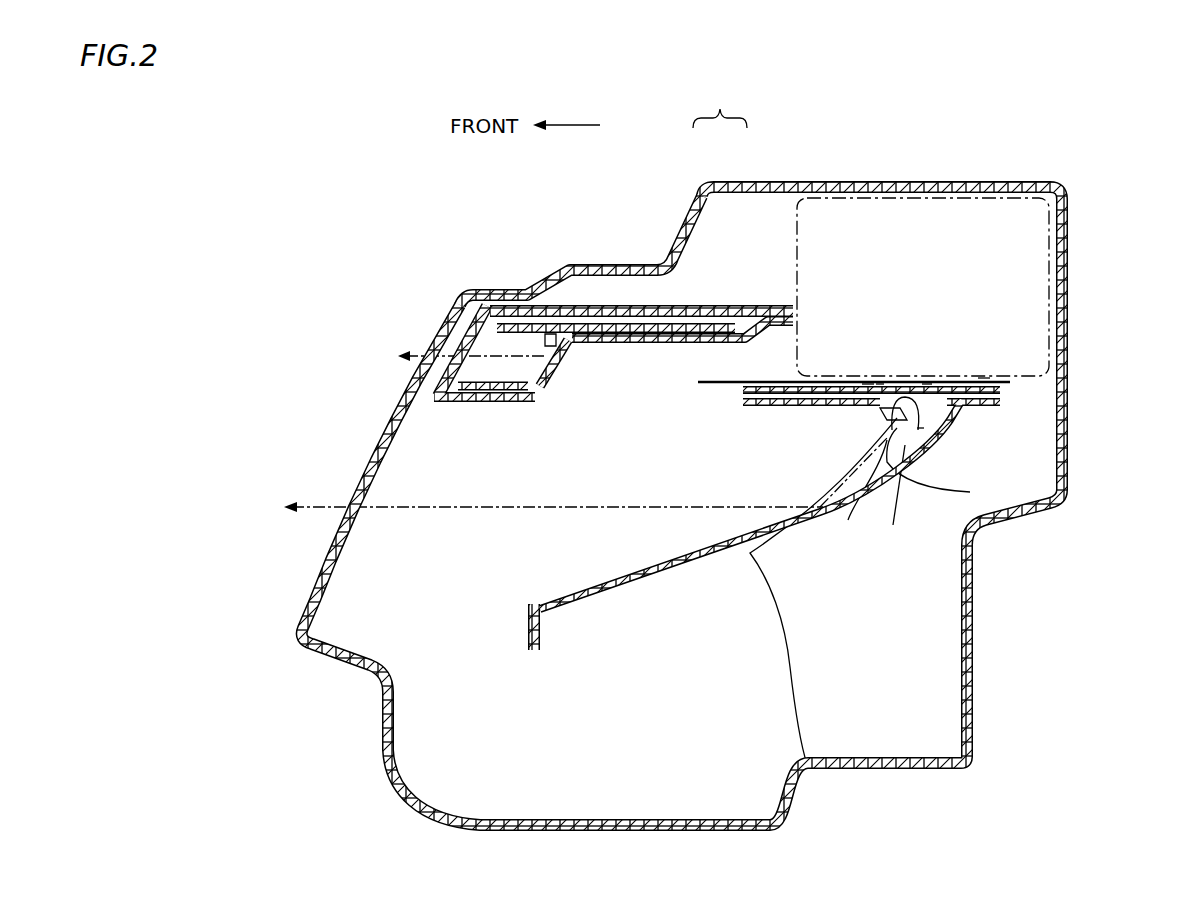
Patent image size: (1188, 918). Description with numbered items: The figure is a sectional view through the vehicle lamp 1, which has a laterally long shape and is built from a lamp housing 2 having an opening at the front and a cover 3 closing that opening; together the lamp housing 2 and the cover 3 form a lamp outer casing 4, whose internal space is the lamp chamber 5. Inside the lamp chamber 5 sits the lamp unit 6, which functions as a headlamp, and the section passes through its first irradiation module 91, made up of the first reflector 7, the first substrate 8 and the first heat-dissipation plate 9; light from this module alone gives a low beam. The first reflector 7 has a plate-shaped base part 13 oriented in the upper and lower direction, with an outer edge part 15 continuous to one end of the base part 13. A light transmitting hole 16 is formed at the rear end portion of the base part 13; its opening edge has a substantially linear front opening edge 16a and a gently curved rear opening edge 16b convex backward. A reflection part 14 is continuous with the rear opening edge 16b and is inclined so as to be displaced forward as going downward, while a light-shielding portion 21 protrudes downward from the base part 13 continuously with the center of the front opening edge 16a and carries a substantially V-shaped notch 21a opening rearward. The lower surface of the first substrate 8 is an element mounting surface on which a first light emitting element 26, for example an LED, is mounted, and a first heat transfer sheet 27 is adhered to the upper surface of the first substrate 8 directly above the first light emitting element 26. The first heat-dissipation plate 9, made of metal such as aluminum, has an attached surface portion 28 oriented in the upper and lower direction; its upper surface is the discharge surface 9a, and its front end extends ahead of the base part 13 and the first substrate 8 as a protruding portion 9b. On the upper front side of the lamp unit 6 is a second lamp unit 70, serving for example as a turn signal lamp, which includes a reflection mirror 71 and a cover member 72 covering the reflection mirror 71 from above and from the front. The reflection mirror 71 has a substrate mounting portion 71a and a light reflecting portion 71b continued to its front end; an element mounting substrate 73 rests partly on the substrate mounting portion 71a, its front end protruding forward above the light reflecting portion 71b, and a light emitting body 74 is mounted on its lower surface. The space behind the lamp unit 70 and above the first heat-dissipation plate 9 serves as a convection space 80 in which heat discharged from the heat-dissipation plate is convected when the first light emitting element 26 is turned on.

The vehicle lamp 1 is at (536, 469).
The lamp housing 2 is at (876, 158).
The cover 3 is at (683, 195).
The lamp outer casing 4 is at (720, 106).
The lamp chamber 5 is at (585, 444).
The lamp unit 6 is at (988, 621).
The first reflector 7 is at (905, 670).
The first substrate 8 is at (945, 340).
The first heat-dissipation plate 9 is at (1015, 258).
The discharge surface 9a is at (1059, 338).
The protruding portion 9b is at (649, 429).
The base part 13 is at (956, 375).
The reflection part 14 is at (815, 794).
The outer edge part 15 is at (748, 639).
The light transmitting hole 16 is at (939, 582).
The front opening edge 16a is at (1009, 476).
The rear opening edge 16b is at (1014, 420).
The light-shielding portion 21 is at (1014, 527).
The notch 21a is at (1046, 523).
The first light emitting element 26 is at (1027, 443).
The first heat transfer sheet 27 is at (963, 261).
The attached surface portion 28 is at (860, 256).
The lamp unit 70 is at (641, 258).
The reflection mirror 71 is at (436, 344).
The substrate mounting portion 71a is at (540, 380).
The light reflecting portion 71b is at (440, 363).
The cover member 72 is at (417, 385).
The element mounting substrate 73 is at (537, 289).
The light emitting body 74 is at (487, 319).
The convection space 80 is at (915, 244).
The first irradiation module 91 is at (914, 256).